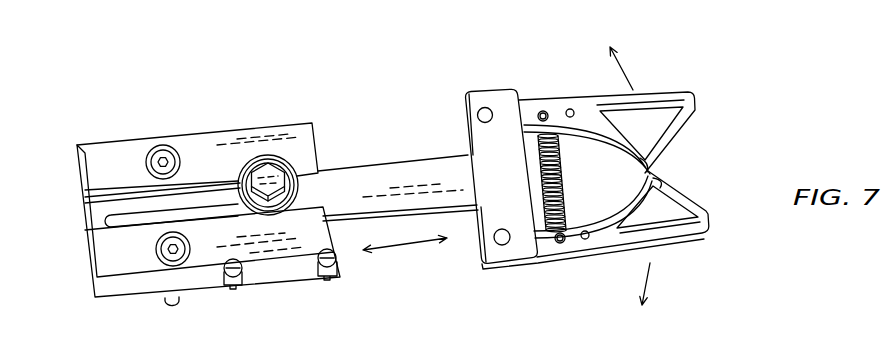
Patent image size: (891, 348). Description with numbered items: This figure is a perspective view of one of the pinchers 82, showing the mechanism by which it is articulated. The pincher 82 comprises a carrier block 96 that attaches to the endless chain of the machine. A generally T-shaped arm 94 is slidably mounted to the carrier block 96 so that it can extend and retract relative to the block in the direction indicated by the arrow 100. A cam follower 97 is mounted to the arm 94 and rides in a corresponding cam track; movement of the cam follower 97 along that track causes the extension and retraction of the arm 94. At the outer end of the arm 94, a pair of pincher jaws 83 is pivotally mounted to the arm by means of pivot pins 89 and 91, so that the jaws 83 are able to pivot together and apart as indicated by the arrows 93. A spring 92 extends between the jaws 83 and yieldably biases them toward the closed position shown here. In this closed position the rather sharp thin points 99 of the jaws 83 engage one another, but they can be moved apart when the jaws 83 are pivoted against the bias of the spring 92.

The pincher 82 is at (574, 184).
The pincher jaws 83 is at (688, 136).
The pivot pin 89 is at (502, 241).
The pivot pin 91 is at (483, 110).
The spring 92 is at (563, 183).
The arrows 93 is at (627, 71).
The T-shaped arm 94 is at (380, 180).
The carrier block 96 is at (200, 153).
The cam follower 97 is at (270, 157).
The points 99 is at (646, 160).
The arrow 100 is at (408, 245).